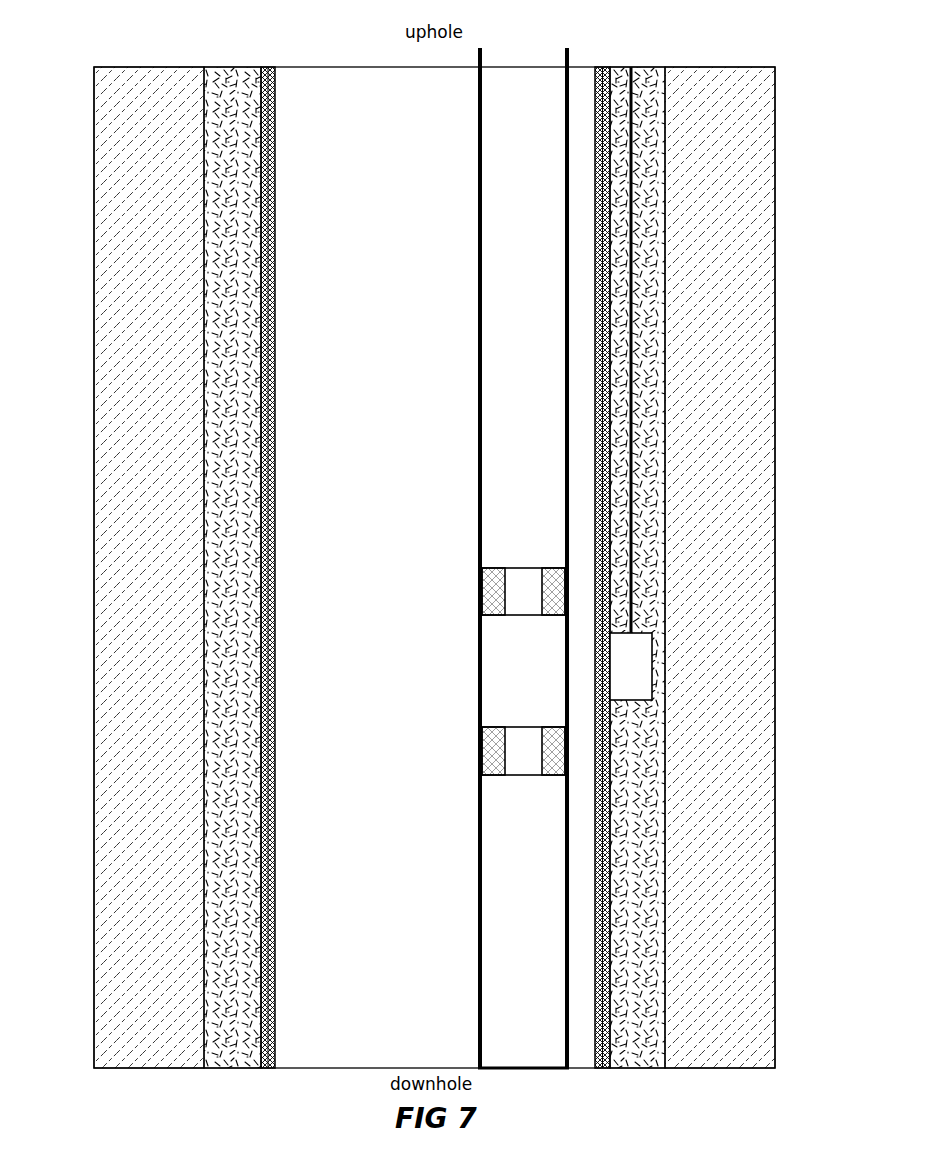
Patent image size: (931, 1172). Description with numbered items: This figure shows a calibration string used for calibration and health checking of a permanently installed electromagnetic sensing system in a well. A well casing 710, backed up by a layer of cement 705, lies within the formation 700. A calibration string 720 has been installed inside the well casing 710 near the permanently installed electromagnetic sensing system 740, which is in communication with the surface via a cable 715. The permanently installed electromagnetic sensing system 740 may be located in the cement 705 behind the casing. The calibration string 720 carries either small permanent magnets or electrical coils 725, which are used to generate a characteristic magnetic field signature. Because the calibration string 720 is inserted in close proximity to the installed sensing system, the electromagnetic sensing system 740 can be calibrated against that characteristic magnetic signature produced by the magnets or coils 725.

The formation 700 is at (166, 227).
The cement 705 is at (228, 400).
The well casing 710 is at (600, 185).
The cable 715 is at (632, 378).
The calibration string 720 is at (478, 130).
The small permanent magnets or electrical coils 725 is at (493, 590).
The permanently installed electromagnetic sensing system 740 is at (630, 665).